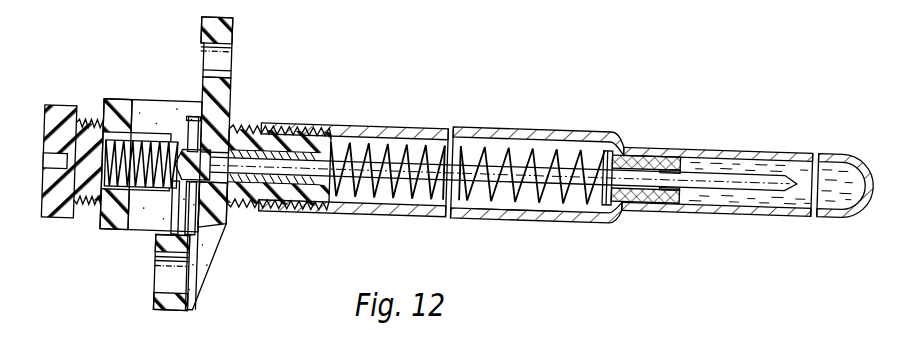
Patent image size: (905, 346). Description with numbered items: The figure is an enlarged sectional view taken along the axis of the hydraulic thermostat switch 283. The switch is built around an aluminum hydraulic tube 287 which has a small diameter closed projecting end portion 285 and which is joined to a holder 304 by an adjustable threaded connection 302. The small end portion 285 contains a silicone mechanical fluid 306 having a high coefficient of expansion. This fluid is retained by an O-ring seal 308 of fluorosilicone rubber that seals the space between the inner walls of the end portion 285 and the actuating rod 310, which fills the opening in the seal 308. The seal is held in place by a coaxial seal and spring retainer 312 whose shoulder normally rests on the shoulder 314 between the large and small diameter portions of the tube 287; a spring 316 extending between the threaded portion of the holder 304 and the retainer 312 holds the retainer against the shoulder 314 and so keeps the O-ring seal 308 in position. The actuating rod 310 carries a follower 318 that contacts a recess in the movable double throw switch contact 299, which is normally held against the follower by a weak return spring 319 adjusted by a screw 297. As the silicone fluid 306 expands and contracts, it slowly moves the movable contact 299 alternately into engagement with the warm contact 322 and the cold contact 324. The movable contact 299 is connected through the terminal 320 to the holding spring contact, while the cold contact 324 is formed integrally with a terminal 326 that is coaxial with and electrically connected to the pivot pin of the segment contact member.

The screw 297 is at (58, 105).
The weak return spring 319 is at (157, 148).
The movable double throw switch contact 299 is at (192, 126).
The terminal 320 is at (230, 50).
The holder 304 is at (228, 90).
The follower 318 is at (253, 133).
The adjustable threaded connection 302 is at (297, 128).
The spring 316 is at (432, 145).
The aluminum hydraulic tube 287 is at (498, 132).
The hydraulic thermostat switch 283 is at (482, 224).
The coaxial seal and spring retainer 312 is at (640, 153).
The actuating rod 310 is at (733, 180).
The silicone mechanical fluid 306 is at (806, 152).
The shoulder 314 is at (613, 226).
The O-ring seal 308 is at (667, 222).
The small diameter closed projecting end portion 285 is at (760, 222).
The warm contact 322 is at (180, 202).
The cold contact 324 is at (200, 208).
The terminal 326 is at (187, 282).